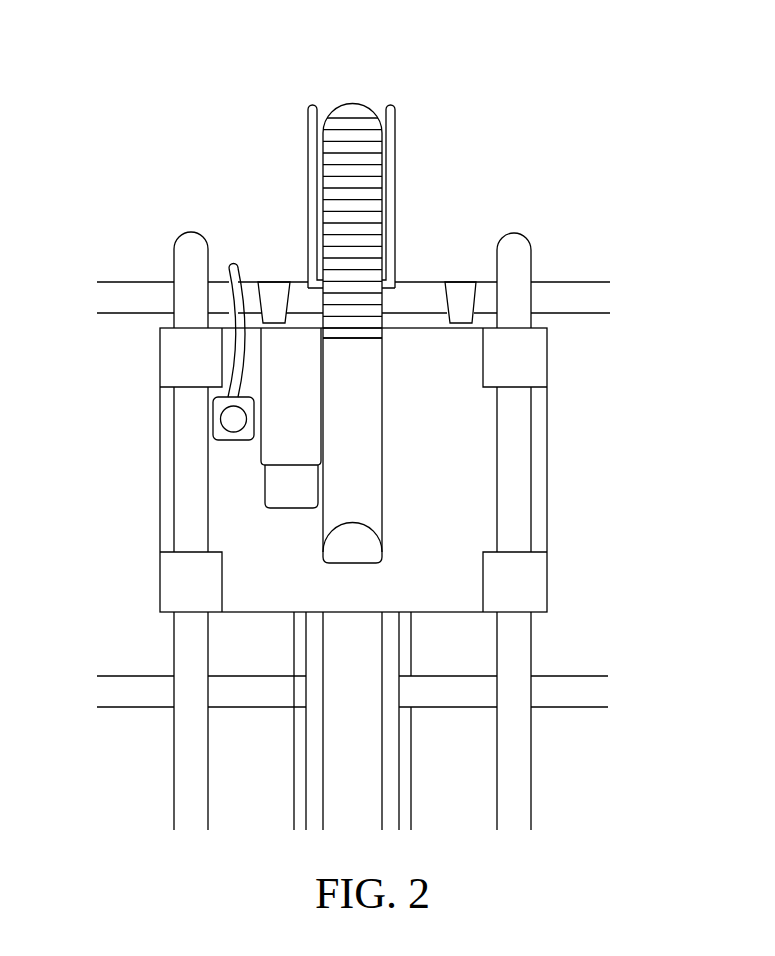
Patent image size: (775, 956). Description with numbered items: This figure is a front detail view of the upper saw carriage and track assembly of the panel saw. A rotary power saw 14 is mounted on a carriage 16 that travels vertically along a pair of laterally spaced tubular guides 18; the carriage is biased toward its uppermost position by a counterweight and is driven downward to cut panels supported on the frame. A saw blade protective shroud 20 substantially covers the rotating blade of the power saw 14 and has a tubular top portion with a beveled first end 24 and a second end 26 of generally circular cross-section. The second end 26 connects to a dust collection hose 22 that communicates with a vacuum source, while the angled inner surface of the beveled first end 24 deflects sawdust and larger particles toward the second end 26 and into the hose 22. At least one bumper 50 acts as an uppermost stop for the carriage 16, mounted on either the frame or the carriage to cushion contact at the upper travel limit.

The rotary power saw 14 is at (263, 462).
The carriage 16 is at (238, 519).
The tubular guides 18 is at (518, 515).
The saw blade protective shroud 20 is at (358, 460).
The dust collection hose 22 is at (360, 120).
The beveled first end 24 is at (338, 560).
The second end 26 is at (360, 338).
The bumper 50 is at (272, 298).